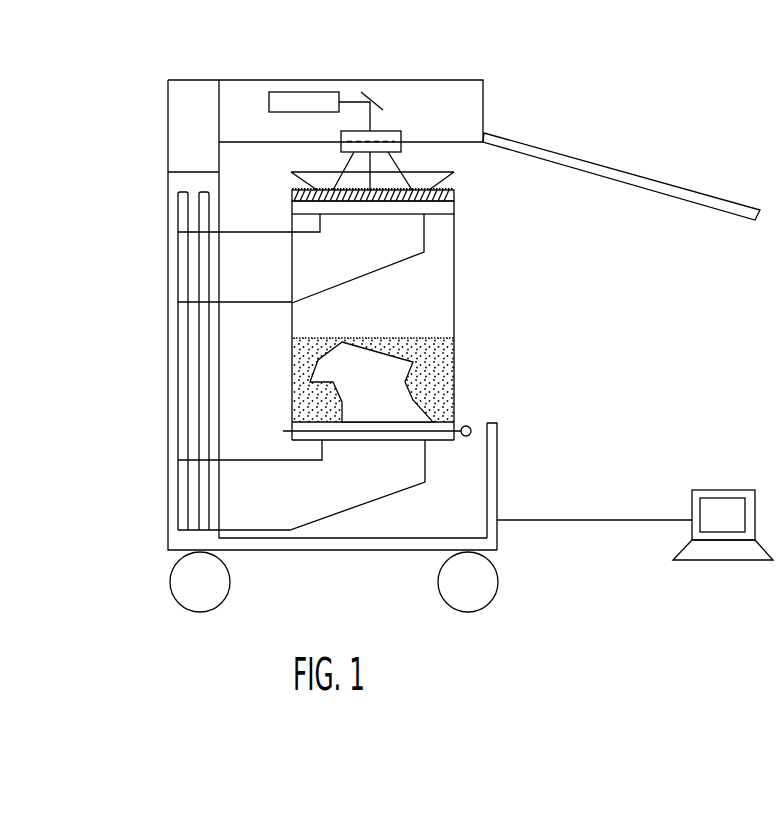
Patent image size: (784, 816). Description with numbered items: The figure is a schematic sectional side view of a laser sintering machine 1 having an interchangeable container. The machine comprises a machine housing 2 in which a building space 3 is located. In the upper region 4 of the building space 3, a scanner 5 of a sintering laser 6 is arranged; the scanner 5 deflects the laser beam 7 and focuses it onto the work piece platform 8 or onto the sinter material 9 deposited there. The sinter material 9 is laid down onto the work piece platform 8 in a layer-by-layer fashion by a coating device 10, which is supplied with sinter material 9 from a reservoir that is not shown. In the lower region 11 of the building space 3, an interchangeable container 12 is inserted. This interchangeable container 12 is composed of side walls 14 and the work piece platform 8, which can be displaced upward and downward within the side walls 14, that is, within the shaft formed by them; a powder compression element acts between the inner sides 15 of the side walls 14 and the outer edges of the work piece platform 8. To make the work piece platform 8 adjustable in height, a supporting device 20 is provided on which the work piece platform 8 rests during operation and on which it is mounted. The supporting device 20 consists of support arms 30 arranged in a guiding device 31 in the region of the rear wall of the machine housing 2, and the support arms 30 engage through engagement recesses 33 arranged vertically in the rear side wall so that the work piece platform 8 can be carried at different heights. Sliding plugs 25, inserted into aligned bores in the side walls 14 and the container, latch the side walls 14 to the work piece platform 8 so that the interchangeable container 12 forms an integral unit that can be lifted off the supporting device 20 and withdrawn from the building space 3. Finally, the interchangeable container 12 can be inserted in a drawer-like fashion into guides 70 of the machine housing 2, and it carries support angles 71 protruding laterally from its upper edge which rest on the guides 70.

The laser sintering machine 1 is at (497, 84).
The machine housing 2 is at (167, 110).
The building space 3 is at (442, 155).
The upper region 4 is at (423, 149).
The scanner 5 is at (393, 131).
The sintering laser 6 is at (300, 98).
The laser beam 7 is at (368, 122).
The work piece platform 8 is at (456, 200).
The sinter material 9 is at (454, 183).
The coating device 10 is at (440, 167).
The lower region 11 is at (467, 477).
The interchangeable container 12 is at (466, 323).
The side walls 14 is at (430, 298).
The inner sides 15 is at (298, 359).
The supporting device 20 is at (389, 484).
The sliding plugs 25 is at (470, 427).
The support arms 30 is at (335, 507).
The guiding device 31 is at (205, 428).
The engagement recesses 33 is at (283, 319).
The guides 70 is at (350, 203).
The support angles 71 is at (398, 203).